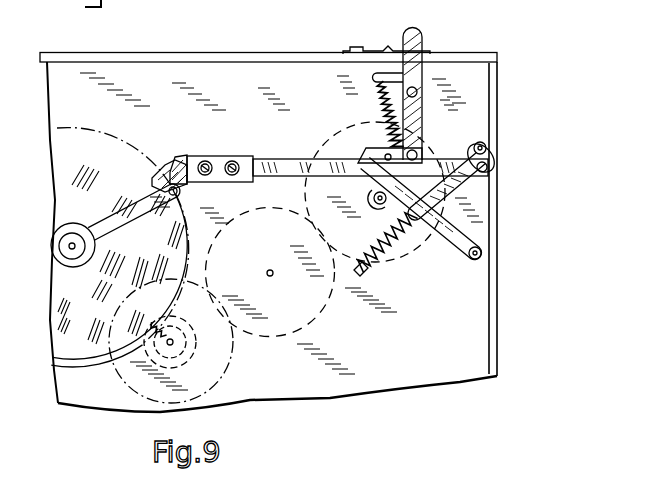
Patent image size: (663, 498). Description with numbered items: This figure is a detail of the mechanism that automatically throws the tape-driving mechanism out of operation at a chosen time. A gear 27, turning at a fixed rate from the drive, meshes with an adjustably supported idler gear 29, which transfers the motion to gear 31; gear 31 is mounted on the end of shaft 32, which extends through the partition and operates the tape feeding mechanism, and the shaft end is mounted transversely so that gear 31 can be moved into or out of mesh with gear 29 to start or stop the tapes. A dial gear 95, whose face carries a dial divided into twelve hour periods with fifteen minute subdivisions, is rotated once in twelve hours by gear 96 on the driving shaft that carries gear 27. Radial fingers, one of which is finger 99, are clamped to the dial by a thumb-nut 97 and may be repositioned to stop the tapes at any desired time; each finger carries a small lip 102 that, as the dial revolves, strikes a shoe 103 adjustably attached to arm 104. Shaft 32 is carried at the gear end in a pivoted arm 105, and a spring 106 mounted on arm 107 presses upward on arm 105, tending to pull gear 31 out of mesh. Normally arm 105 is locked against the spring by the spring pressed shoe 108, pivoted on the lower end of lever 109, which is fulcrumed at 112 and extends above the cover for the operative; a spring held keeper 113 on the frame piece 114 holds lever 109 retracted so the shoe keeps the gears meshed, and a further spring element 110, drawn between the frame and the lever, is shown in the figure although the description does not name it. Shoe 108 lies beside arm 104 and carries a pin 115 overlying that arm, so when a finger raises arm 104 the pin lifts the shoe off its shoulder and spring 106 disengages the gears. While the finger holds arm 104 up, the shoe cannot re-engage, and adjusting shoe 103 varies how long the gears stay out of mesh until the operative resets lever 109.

The gear 27 is at (171, 341).
The idler gear 29 is at (270, 272).
The gear 31 is at (375, 192).
The shaft 32 is at (375, 196).
The gear 95 is at (119, 247).
The gear 96 is at (174, 328).
The thumb-nut 97 is at (70, 245).
The finger 99 is at (147, 210).
The lip 102 is at (153, 185).
The shoe 103 is at (178, 160).
The arm 104 is at (290, 160).
The arm 105 is at (468, 259).
The spring 106 is at (396, 258).
The arm 107 is at (450, 183).
The spring pressed shoe 108 is at (421, 145).
The lever 109 is at (415, 90).
The spring 110 is at (363, 160).
The fulcrum 112 is at (417, 94).
The spring held keeper 113 is at (387, 46).
The frame piece 114 is at (243, 62).
The pin 115 is at (384, 156).